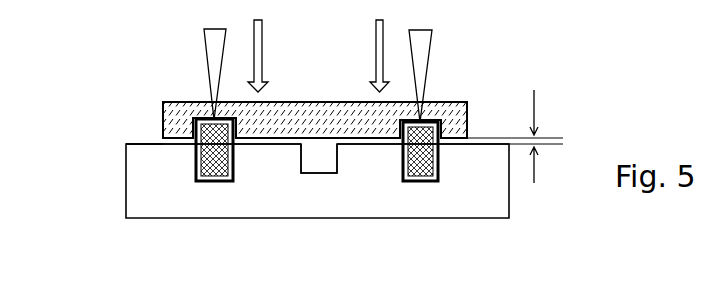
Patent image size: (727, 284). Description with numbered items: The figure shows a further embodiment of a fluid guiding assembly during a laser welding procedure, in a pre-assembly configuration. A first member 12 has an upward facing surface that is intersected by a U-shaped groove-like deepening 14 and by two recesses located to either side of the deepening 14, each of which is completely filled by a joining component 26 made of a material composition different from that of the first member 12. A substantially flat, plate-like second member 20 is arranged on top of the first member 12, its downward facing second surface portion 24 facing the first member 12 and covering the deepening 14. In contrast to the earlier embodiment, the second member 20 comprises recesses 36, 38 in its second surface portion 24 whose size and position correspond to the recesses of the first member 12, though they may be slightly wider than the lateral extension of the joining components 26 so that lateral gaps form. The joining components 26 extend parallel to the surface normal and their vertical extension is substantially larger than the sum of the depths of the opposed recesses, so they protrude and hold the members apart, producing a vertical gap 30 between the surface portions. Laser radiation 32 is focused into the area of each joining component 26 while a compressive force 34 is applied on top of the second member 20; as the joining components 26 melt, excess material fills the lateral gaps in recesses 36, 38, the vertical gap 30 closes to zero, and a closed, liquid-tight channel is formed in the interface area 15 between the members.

The first member 12 is at (135, 180).
The groove-like deepening 14 is at (327, 175).
The interface area 15 is at (152, 137).
The second member 20 is at (309, 117).
The second surface portion 24 is at (272, 146).
The joining component 26 is at (210, 182).
The vertical gap 30 is at (555, 141).
The laser radiation 32 is at (208, 70).
The compressive force 34 is at (254, 26).
The recess 36 is at (196, 144).
The recess 38 is at (402, 150).